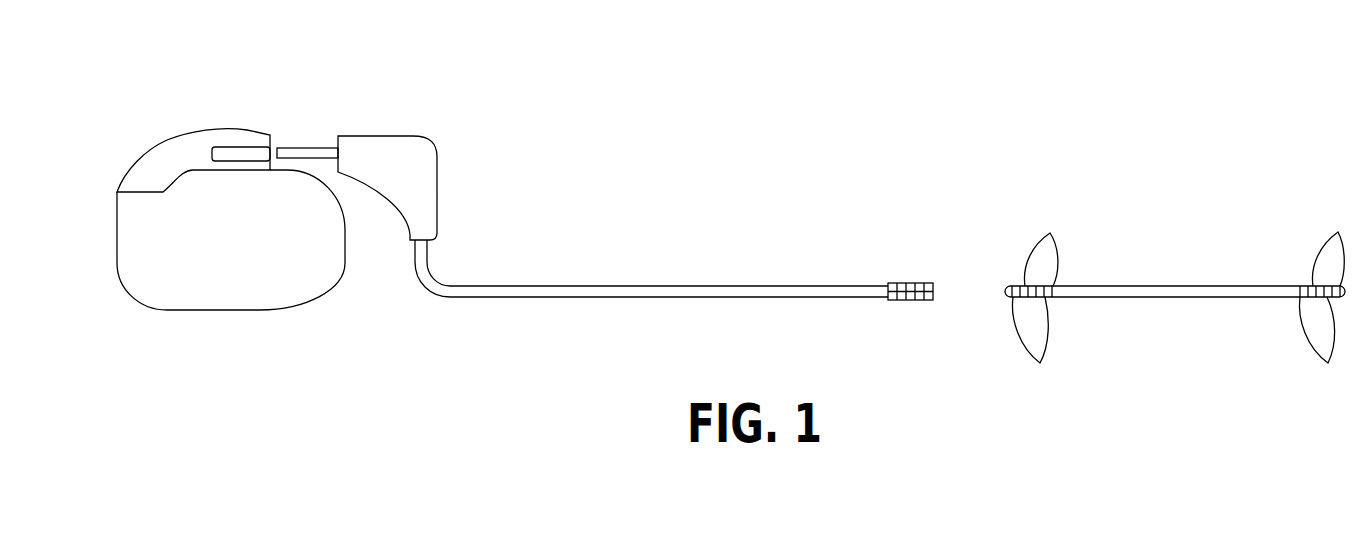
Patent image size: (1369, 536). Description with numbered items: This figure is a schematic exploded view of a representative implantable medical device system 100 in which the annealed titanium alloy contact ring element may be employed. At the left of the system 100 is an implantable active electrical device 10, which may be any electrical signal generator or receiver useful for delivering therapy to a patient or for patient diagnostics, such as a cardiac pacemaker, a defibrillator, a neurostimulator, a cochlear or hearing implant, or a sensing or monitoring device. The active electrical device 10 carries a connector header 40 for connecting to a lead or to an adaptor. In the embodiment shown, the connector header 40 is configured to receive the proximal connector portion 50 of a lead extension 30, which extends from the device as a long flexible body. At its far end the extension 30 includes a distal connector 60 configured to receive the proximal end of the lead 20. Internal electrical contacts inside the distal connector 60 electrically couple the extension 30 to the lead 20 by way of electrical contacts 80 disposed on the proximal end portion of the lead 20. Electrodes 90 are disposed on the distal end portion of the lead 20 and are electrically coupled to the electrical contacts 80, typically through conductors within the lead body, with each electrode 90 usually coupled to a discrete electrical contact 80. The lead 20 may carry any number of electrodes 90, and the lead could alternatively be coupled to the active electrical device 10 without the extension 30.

The implantable medical device system 100 is at (722, 118).
The implantable active electrical device 10 is at (255, 310).
The connector header 40 is at (150, 145).
The proximal connector portion 50 is at (403, 137).
The lead extension 30 is at (610, 286).
The distal connector 60 is at (910, 283).
The lead 20 is at (1215, 286).
The electrical contacts 80 is at (1041, 302).
The electrodes 90 is at (1327, 303).